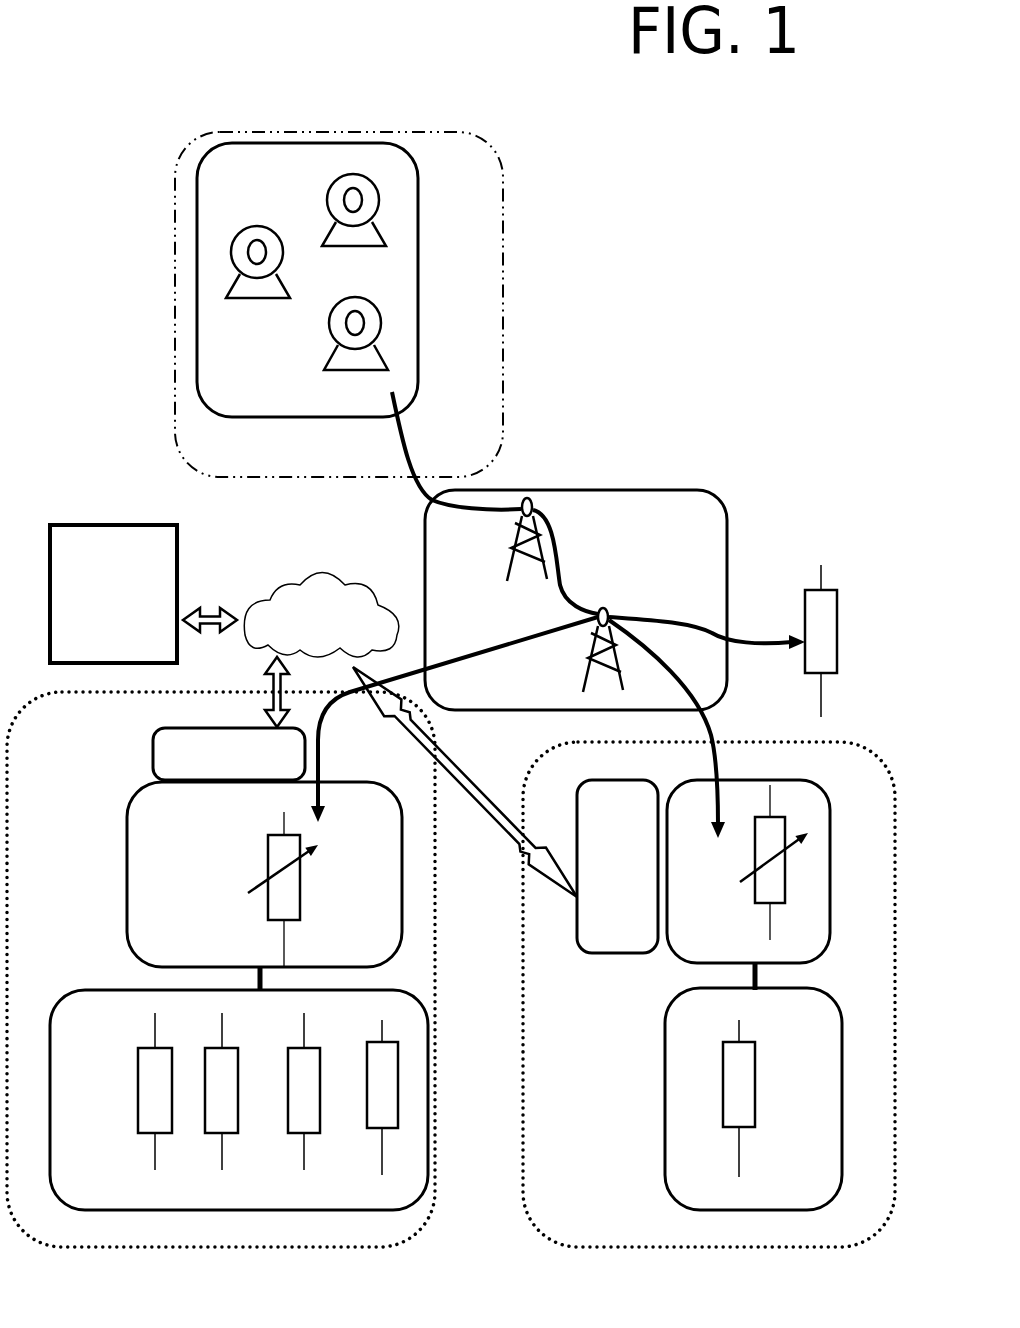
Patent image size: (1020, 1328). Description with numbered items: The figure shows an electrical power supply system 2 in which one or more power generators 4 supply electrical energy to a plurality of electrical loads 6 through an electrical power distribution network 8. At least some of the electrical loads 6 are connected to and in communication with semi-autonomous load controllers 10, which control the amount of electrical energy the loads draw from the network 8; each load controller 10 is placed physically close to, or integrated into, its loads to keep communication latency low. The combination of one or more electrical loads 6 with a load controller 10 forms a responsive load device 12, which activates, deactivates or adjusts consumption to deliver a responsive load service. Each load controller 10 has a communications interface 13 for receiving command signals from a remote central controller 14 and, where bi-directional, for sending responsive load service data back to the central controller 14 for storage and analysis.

The electrical power supply system 2 is at (907, 622).
The power generators 4 is at (249, 365).
The electrical loads 6 is at (77, 1087).
The electrical power distribution network 8 is at (590, 553).
The semi-autonomous load controller 10 is at (174, 875).
The responsive load device 12 is at (63, 860).
The communications interface 13 is at (213, 773).
The remote central controller 14 is at (98, 595).